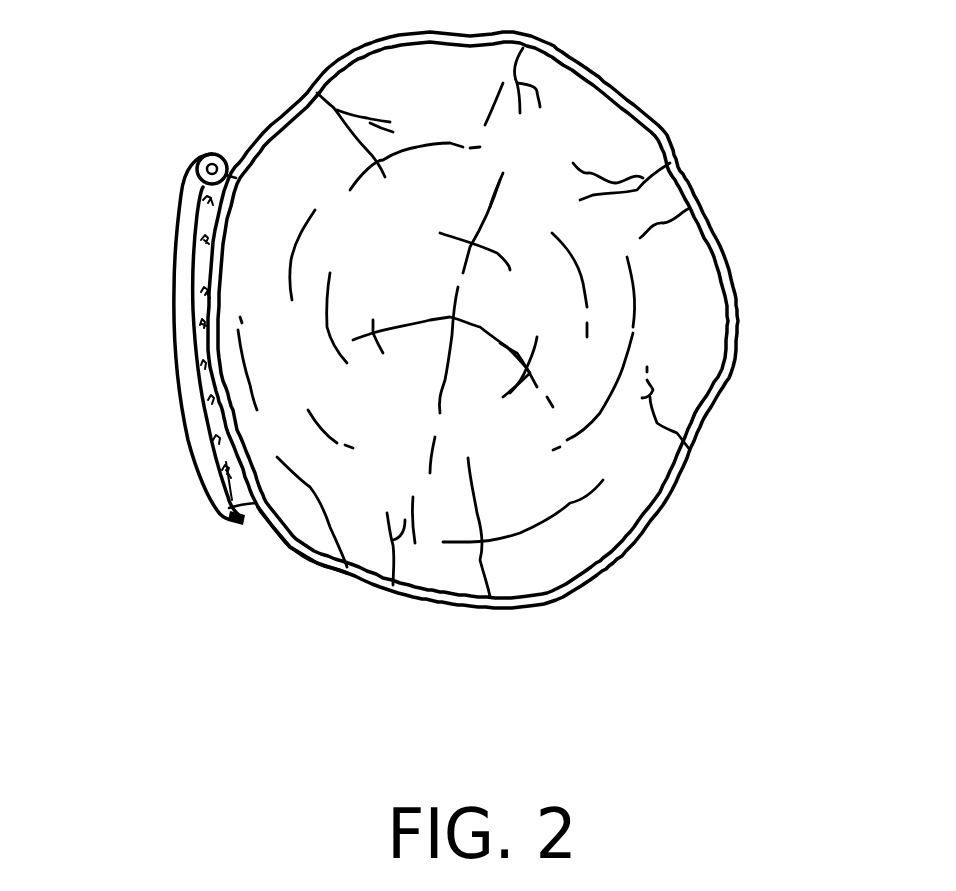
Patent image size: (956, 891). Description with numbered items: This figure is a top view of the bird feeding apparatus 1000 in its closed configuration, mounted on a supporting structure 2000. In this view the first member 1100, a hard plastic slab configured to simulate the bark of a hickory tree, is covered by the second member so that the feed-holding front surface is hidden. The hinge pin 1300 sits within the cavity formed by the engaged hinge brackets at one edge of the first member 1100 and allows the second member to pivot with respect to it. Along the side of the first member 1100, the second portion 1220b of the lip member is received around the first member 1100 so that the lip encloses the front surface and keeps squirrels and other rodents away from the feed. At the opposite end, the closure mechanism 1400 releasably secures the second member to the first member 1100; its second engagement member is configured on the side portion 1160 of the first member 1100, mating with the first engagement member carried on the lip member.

The bird feeding apparatus 1000 is at (157, 347).
The first member 1100 is at (234, 146).
The side portion 1160 is at (252, 509).
The second portion 1220b is at (180, 324).
The hinge pin 1300 is at (212, 153).
The closure mechanism 1400 is at (235, 528).
The supporting structure 2000 is at (743, 292).